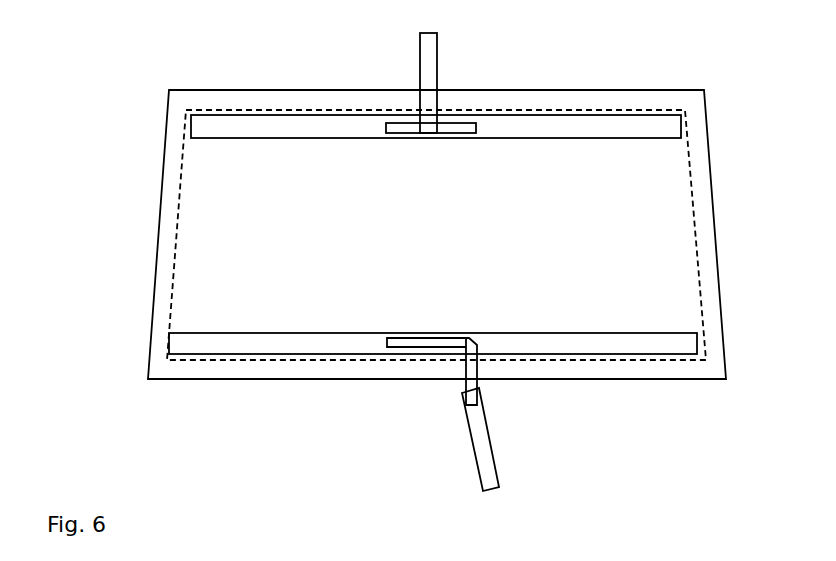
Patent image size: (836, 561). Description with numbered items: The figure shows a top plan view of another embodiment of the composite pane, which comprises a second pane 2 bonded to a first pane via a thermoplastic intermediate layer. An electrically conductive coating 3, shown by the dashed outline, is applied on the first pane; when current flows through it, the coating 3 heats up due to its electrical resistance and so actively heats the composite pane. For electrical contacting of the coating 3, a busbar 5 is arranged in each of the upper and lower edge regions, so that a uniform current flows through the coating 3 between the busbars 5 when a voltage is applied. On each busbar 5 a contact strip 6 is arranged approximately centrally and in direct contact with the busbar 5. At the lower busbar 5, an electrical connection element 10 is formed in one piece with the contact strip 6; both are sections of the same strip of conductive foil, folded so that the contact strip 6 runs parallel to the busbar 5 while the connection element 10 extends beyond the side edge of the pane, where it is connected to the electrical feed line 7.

The second pane 2 is at (177, 157).
The electrically conductive coating 3 is at (177, 233).
The busbar 5 is at (252, 130).
The contact strip 6 is at (403, 128).
The electrical feed line 7 is at (430, 63).
The electrical connection element 10 is at (472, 372).